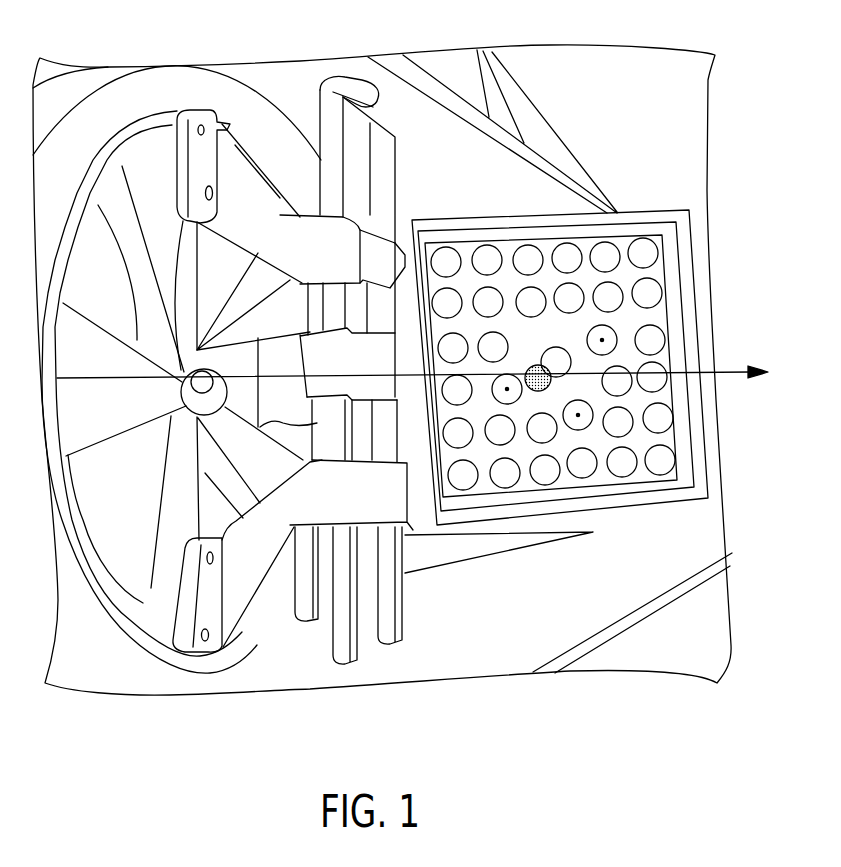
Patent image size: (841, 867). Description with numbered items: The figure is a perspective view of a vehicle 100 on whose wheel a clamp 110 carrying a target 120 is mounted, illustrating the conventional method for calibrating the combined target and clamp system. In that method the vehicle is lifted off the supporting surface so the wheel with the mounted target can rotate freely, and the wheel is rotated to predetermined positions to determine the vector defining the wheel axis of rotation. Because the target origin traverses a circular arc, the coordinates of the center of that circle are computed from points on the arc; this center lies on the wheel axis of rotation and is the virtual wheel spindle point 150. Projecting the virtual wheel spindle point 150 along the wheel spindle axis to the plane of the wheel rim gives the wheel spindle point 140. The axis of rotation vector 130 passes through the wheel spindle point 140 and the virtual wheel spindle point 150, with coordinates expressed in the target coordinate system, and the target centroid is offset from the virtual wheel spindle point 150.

The vehicle 100 is at (427, 127).
The clamp 110 is at (333, 94).
The target 120 is at (630, 212).
The axis of rotation vector 130 is at (730, 375).
The wheel spindle point 140 is at (181, 390).
The virtual wheel spindle point 150 is at (552, 377).